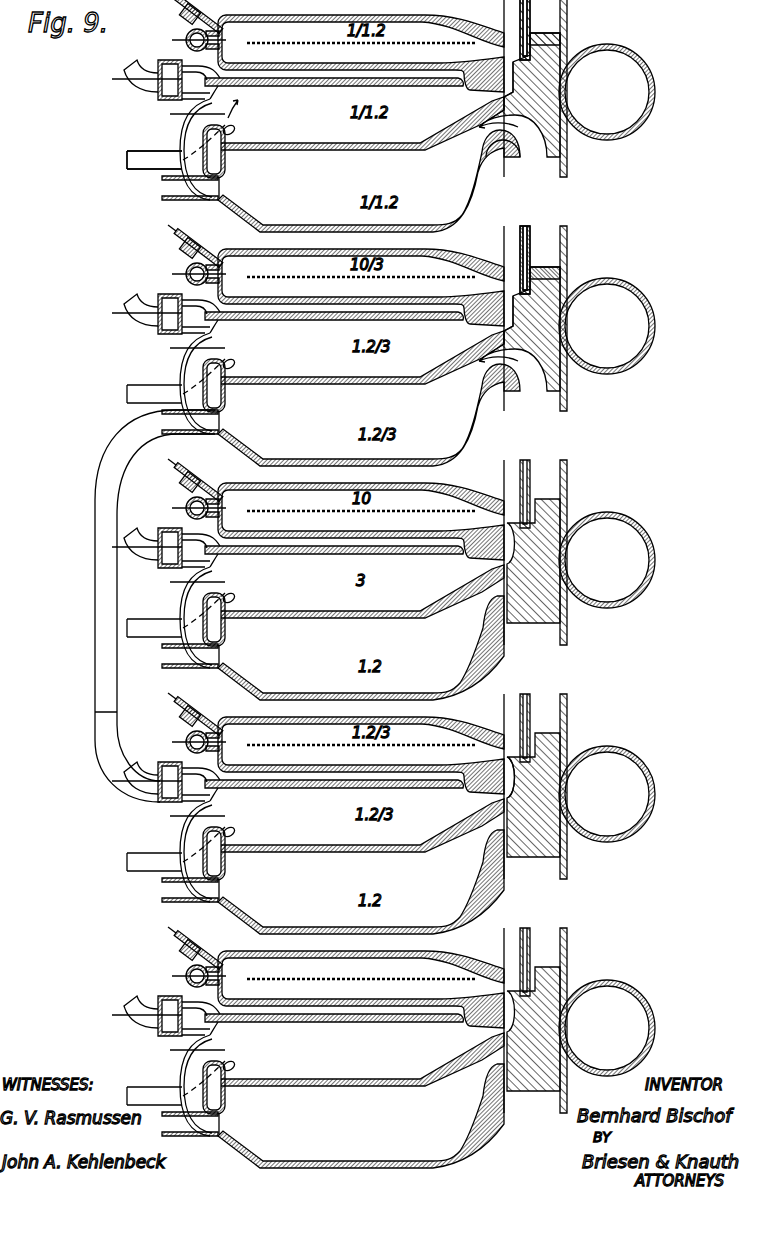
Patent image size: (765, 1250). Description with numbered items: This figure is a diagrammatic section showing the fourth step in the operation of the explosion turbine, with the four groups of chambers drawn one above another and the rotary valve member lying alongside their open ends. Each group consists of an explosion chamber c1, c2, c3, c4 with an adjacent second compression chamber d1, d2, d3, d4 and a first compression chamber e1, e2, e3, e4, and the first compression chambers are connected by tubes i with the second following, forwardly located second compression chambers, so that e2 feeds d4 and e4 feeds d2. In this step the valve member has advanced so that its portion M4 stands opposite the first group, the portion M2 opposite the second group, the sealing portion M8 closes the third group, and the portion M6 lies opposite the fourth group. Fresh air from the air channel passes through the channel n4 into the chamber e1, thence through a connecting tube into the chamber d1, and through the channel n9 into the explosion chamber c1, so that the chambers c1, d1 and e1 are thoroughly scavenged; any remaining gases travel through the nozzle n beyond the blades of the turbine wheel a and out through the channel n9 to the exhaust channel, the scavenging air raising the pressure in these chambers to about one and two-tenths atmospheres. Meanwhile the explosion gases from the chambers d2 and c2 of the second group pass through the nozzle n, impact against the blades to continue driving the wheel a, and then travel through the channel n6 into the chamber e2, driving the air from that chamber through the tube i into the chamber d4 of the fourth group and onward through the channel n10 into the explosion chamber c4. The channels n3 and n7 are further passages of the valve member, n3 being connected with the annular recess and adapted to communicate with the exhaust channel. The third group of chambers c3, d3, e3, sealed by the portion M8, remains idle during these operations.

The explosion chamber c1 is at (336, 514).
The second compression chamber d1 is at (354, 582).
The first compression chamber e1 is at (369, 645).
The explosion chamber c2 is at (336, 275).
The second compression chamber d2 is at (354, 348).
The first compression chamber e2 is at (369, 411).
The explosion chamber c3 is at (336, 509).
The second compression chamber d3 is at (354, 582).
The first compression chamber e3 is at (361, 648).
The explosion chamber c4 is at (336, 743).
The second compression chamber d4 is at (354, 816).
The first compression chamber e4 is at (361, 882).
The nozzle n is at (510, 46).
The channel n3 is at (557, 72).
The channel n9 is at (506, 83).
The channel n4 is at (530, 143).
The channel n7 is at (508, 302).
The channel n6 is at (542, 322).
The channel n10 is at (509, 772).
The portion of valve member M4 is at (509, 155).
The portion of valve member M2 is at (509, 389).
The sealing portion M8 is at (509, 623).
The portion of valve member M6 is at (509, 857).
The tube i is at (96, 598).
The turbine wheel a is at (163, 156).